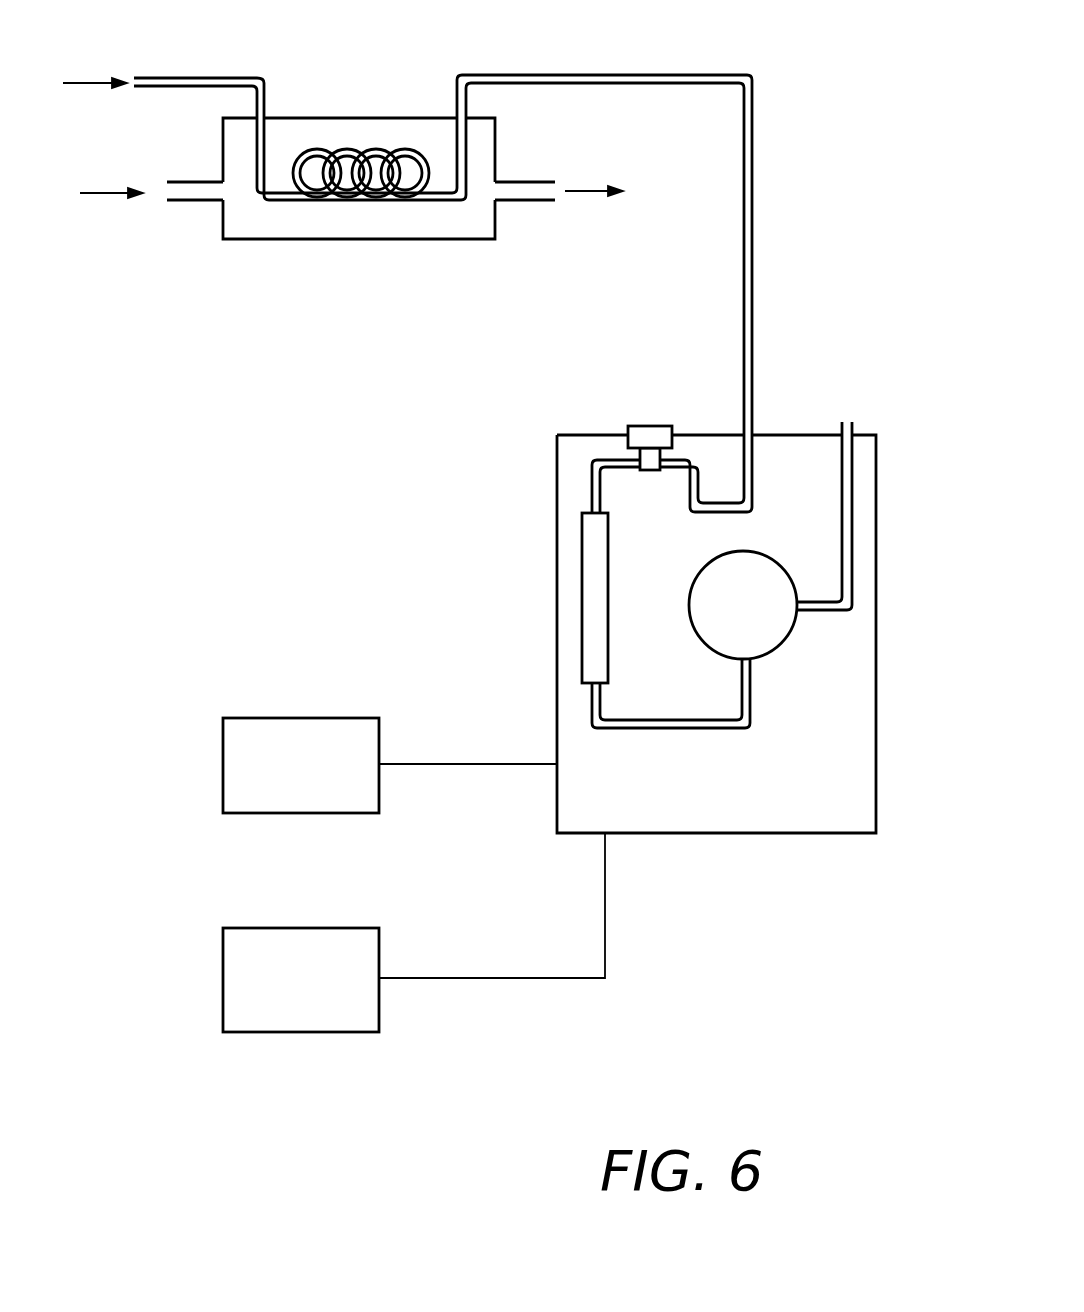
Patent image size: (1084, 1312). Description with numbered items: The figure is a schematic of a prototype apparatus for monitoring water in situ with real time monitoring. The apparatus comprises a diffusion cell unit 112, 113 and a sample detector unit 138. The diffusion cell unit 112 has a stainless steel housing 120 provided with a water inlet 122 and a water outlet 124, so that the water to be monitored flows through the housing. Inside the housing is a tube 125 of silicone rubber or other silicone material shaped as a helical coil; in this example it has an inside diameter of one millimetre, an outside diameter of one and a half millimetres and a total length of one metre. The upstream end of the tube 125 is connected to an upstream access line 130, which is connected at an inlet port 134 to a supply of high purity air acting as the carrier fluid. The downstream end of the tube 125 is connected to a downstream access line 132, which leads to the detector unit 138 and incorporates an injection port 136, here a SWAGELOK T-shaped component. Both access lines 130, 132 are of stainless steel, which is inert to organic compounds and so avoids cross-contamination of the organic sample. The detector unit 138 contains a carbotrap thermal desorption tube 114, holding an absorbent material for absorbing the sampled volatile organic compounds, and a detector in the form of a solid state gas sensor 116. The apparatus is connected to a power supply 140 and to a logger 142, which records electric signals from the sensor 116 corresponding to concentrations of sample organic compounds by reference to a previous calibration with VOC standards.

The diffusion cell unit 112 is at (343, 209).
The diffusion cell unit 113 is at (694, 670).
The carbotrap thermal desorption tube 114 is at (590, 543).
The solid state gas sensor 116 is at (780, 645).
The stainless steel housing 120 is at (253, 239).
The water inlet 122 is at (178, 203).
The water outlet 124 is at (517, 178).
The tube 125 is at (440, 255).
The upstream access line 130 is at (265, 98).
The downstream access line 132 is at (455, 90).
The inlet port 134 is at (145, 75).
The injection port 136 is at (642, 425).
The sample detector unit 138 is at (557, 622).
The power supply 140 is at (220, 755).
The logger 142 is at (222, 967).